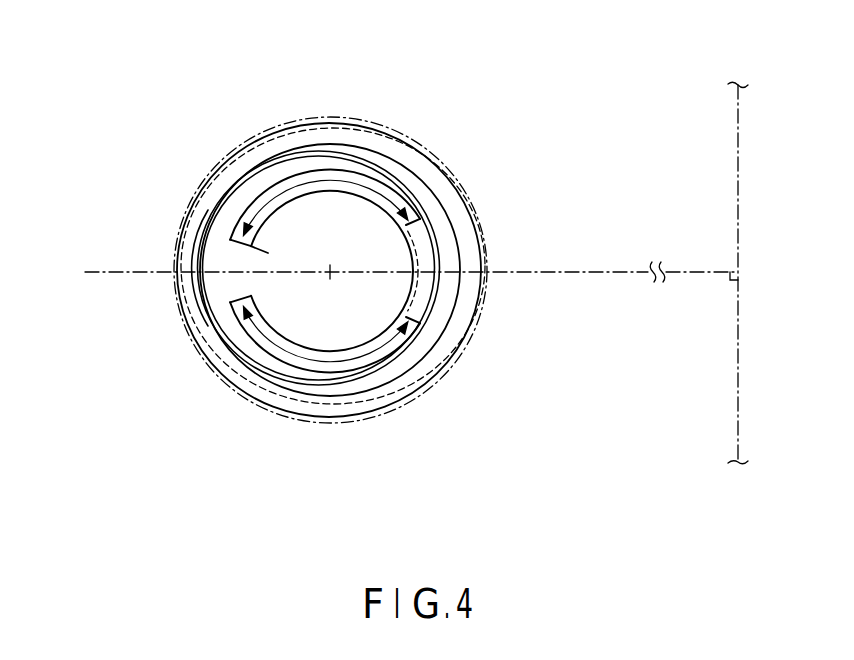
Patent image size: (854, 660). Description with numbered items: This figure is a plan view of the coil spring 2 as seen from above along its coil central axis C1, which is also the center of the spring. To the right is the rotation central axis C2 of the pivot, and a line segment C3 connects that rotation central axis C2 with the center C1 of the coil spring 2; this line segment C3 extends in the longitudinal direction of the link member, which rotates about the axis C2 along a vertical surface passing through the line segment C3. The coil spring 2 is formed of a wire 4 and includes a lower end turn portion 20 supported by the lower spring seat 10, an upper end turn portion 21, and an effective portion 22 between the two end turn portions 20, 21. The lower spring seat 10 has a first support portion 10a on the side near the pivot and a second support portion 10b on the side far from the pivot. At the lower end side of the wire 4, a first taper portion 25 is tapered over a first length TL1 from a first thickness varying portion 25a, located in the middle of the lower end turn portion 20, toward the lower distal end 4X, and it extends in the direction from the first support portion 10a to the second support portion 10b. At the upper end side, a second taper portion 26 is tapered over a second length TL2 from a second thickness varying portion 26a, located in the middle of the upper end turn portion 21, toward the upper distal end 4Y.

The coil spring 2 is at (431, 81).
The effective portion 22 is at (236, 152).
The lower end turn portion 20 is at (432, 232).
The upper end turn portion 21 is at (422, 292).
The lower spring seat 10 is at (215, 378).
The first support portion 10a is at (398, 368).
The second support portion 10b is at (218, 316).
The wire 4 is at (357, 380).
The second taper portion 26 is at (287, 190).
The second thickness varying portion 26a is at (412, 226).
The second length TL2 is at (334, 182).
The upper distal end 4Y is at (232, 240).
The first taper portion 25 is at (278, 328).
The first thickness varying portion 25a is at (399, 313).
The first length TL1 is at (332, 360).
The lower distal end 4X is at (232, 302).
The coil central axis C1 is at (331, 270).
The rotation central axis C2 is at (735, 129).
The line segment C3 is at (616, 270).